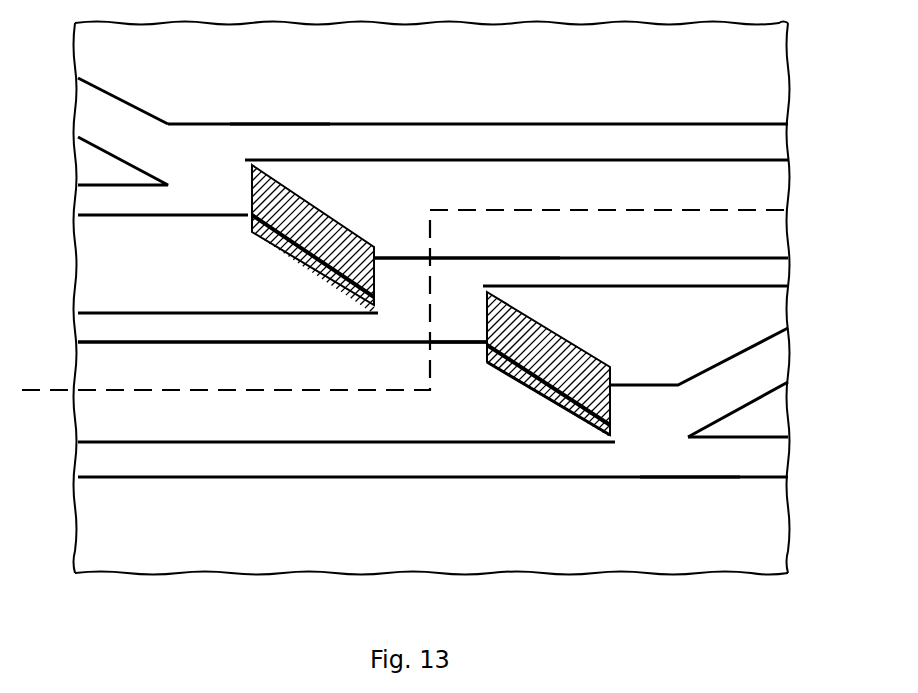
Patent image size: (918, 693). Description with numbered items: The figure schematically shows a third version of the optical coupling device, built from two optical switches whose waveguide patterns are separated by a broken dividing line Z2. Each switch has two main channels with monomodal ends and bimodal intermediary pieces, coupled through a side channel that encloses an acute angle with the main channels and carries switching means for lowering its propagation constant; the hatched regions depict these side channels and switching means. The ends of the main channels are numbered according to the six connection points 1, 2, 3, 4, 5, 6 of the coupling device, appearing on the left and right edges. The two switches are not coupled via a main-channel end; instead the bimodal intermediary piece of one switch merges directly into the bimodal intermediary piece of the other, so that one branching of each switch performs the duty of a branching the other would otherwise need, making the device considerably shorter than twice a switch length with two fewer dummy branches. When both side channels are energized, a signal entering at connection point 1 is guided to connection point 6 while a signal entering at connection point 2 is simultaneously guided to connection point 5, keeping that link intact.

The connection point 1 is at (146, 176).
The connection point 2 is at (266, 335).
The connection point 3 is at (330, 460).
The connection point 4 is at (532, 144).
The connection point 5 is at (651, 275).
The connection point 6 is at (754, 456).
The dividing line Z2 is at (32, 402).